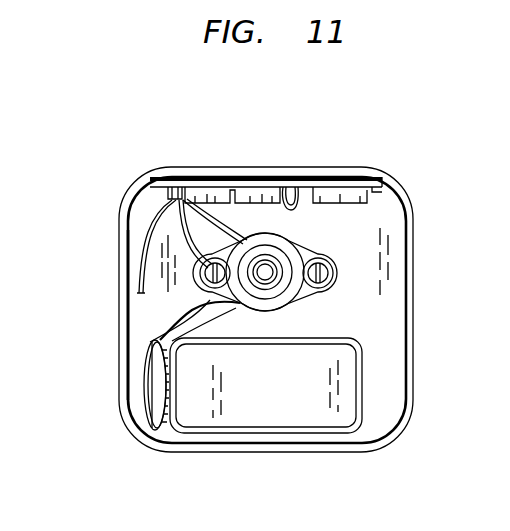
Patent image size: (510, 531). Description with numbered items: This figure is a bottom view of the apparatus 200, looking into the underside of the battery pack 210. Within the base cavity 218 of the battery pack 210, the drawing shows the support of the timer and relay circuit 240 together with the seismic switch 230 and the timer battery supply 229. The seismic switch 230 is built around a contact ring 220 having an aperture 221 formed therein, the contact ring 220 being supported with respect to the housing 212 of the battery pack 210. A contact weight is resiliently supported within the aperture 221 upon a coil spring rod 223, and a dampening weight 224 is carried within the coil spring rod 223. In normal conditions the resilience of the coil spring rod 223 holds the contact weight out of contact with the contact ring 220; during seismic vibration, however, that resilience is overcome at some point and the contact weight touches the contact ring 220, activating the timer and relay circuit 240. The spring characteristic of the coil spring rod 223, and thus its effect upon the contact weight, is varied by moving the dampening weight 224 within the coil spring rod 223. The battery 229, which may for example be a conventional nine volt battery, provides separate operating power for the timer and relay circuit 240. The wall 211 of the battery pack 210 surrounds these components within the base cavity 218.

The apparatus 200 is at (246, 284).
The battery pack 210 is at (223, 310).
The housing side wall 211 is at (90, 314).
The housing 212 is at (263, 157).
The base cavity 218 is at (402, 174).
The contact ring 220 is at (310, 238).
The aperture 221 is at (199, 211).
The coil spring rod 223 is at (302, 265).
The dampening weight 224 is at (263, 324).
The timer battery supply 229 is at (289, 415).
The seismic switch 230 is at (161, 365).
The timer and relay circuit 240 is at (319, 171).